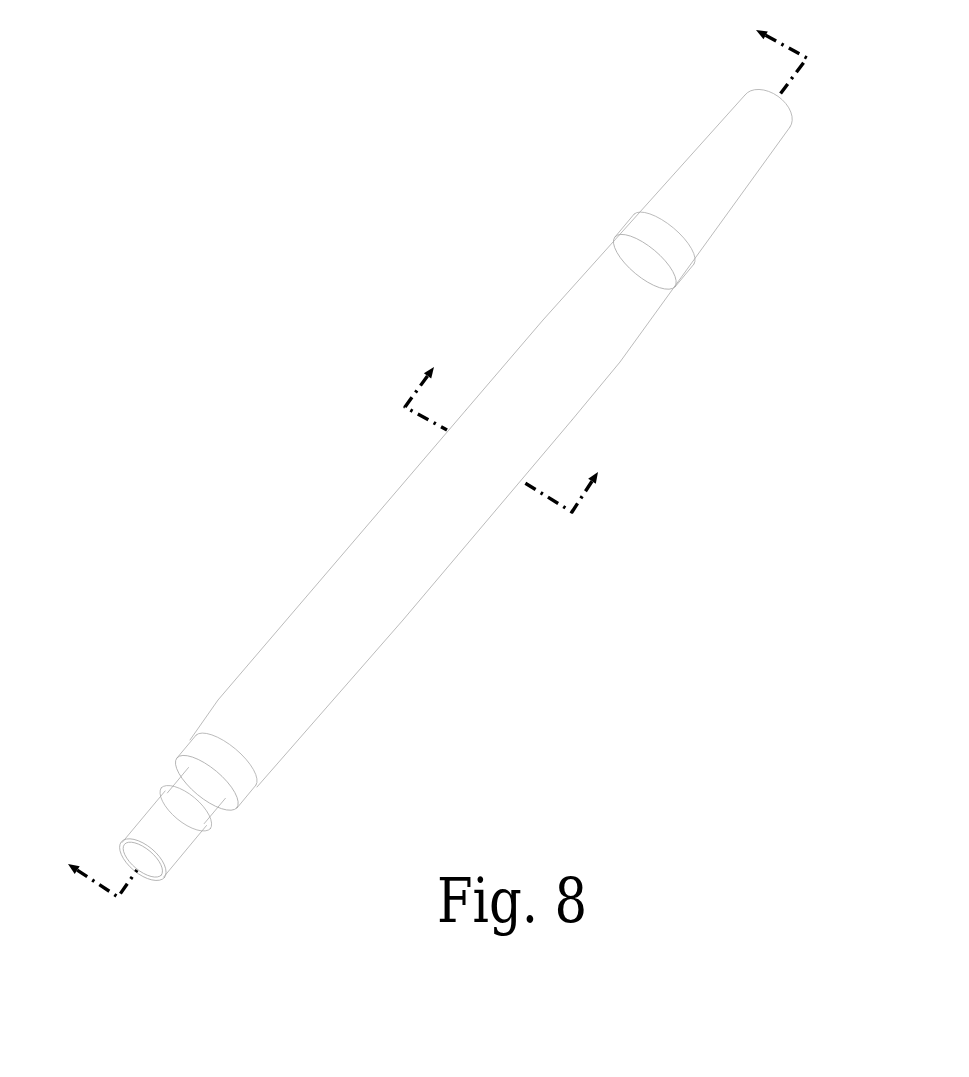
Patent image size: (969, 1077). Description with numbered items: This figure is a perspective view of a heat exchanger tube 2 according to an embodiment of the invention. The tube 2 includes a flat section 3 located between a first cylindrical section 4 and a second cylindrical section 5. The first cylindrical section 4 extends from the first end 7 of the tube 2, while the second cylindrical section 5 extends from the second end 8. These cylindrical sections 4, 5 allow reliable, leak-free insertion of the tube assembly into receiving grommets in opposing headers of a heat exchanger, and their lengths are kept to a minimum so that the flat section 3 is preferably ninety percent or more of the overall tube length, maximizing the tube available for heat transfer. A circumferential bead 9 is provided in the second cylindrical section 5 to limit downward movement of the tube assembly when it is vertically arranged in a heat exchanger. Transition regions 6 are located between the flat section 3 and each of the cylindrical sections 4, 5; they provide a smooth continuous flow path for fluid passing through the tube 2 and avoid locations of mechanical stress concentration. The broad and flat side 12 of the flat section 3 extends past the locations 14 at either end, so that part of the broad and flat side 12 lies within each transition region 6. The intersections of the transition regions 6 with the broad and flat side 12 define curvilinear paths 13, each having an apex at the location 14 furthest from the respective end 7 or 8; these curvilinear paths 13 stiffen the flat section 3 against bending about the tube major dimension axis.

The tube 2 is at (448, 470).
The flat section 3 is at (270, 665).
The first cylindrical section 4 is at (703, 203).
The second cylindrical section 5 is at (170, 848).
The transition region 6 is at (416, 473).
The first end 7 is at (793, 130).
The second end 8 is at (113, 843).
The circumferential bead 9 is at (217, 828).
The broad and flat side 12 is at (492, 441).
The curvilinear path 13 is at (250, 765).
The location distal to the end 14 is at (237, 742).